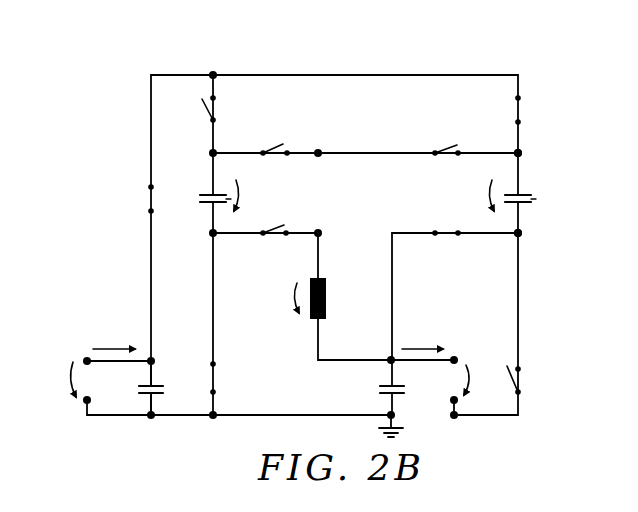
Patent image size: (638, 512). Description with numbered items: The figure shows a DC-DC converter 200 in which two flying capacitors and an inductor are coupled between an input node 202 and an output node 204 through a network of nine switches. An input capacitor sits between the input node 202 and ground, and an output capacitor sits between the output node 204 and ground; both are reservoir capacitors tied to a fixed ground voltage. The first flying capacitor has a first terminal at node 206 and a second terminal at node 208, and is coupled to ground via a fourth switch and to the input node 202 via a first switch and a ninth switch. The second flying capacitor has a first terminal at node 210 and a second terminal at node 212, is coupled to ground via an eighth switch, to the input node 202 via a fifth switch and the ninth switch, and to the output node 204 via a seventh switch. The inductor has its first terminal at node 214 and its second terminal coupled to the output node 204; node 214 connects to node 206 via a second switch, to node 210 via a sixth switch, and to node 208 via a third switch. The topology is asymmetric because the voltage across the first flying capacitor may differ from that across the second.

The DC-DC converter 200 is at (168, 58).
The input node 202 is at (150, 361).
The output node 204 is at (391, 360).
The node 206 is at (213, 153).
The node 208 is at (213, 233).
The node 210 is at (523, 153).
The node 212 is at (523, 233).
The node 214 is at (318, 233).